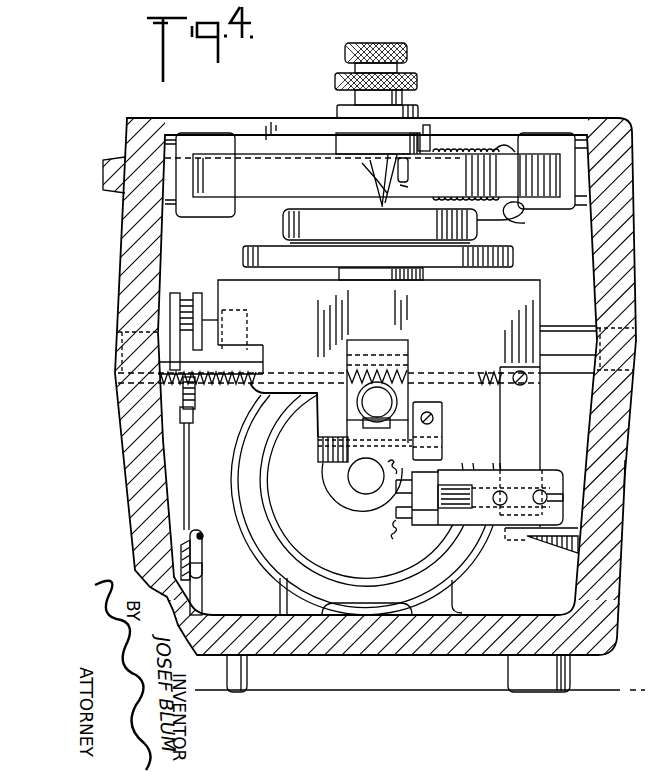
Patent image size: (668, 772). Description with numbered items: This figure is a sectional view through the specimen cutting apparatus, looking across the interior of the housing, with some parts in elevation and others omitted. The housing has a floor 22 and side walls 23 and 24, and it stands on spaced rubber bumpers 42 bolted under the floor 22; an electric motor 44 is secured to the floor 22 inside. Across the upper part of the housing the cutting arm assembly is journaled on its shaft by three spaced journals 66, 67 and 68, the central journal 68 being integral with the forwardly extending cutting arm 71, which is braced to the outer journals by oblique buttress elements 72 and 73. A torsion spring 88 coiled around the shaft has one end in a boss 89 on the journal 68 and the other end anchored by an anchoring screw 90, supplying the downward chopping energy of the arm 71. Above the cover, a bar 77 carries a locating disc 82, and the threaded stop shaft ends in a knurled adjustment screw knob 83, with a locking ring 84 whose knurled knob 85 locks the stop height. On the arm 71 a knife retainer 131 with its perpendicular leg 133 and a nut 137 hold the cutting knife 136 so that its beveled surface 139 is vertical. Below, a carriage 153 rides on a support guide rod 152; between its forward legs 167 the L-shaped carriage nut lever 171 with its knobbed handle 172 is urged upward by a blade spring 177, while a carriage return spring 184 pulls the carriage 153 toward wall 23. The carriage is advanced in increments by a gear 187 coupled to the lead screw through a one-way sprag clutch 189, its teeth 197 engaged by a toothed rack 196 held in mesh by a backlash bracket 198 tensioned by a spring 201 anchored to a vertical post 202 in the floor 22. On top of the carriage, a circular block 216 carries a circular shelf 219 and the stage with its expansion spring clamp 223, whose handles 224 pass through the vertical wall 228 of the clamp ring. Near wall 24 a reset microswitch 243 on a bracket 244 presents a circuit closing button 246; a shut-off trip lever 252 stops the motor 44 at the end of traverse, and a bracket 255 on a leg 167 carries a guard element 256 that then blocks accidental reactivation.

The floor 22 is at (396, 645).
The side wall 23 is at (122, 471).
The side wall 24 is at (626, 478).
The rubber bumpers 42 is at (240, 692).
The electric motor 44 is at (310, 512).
The journal 66 is at (203, 133).
The journal 67 is at (538, 134).
The central journal 68 is at (326, 140).
The cutting arm 71 is at (384, 166).
The buttress element 72 is at (256, 188).
The buttress element 73 is at (506, 188).
The bar 77 is at (272, 133).
The disc 82 is at (340, 112).
The knurled adjustment screw knob 83 is at (400, 47).
The locking ring 84 is at (403, 97).
The knurled knob 85 is at (410, 78).
The torsion spring 88 is at (452, 150).
The boss 89 is at (428, 125).
The anchoring screw 90 is at (506, 140).
The knife retainer 131 is at (406, 190).
The perpendicular leg 133 is at (398, 144).
The cutting knife 136 is at (378, 195).
The nut 137 is at (410, 170).
The beveled surface 139 is at (368, 208).
The support guide rod 152 is at (258, 367).
The carriage 153 is at (480, 311).
The legs 167 is at (412, 458).
The carriage nut lever 171 is at (348, 408).
The knobbed handle 172 is at (398, 372).
The blade spring 177 is at (320, 450).
The carriage return spring 184 is at (152, 380).
The gear 187 is at (178, 296).
The one-way sprag clutch 189 is at (562, 326).
The toothed rack 196 is at (194, 414).
The teeth 197 is at (204, 320).
The backlash bracket 198 is at (190, 490).
The spring 201 is at (203, 568).
The vertical post 202 is at (202, 586).
The circular block 216 is at (335, 270).
The circular shelf 219 is at (243, 256).
The expansion spring clamp 223 is at (514, 255).
The handles 224 is at (527, 226).
The vertical wall 228 is at (287, 222).
The reset microswitch 243 is at (470, 485).
The bracket 244 is at (540, 546).
The circuit closing button 246 is at (502, 493).
The shut-off trip lever 252 is at (522, 424).
The bracket 255 is at (440, 432).
The guard element 256 is at (430, 520).